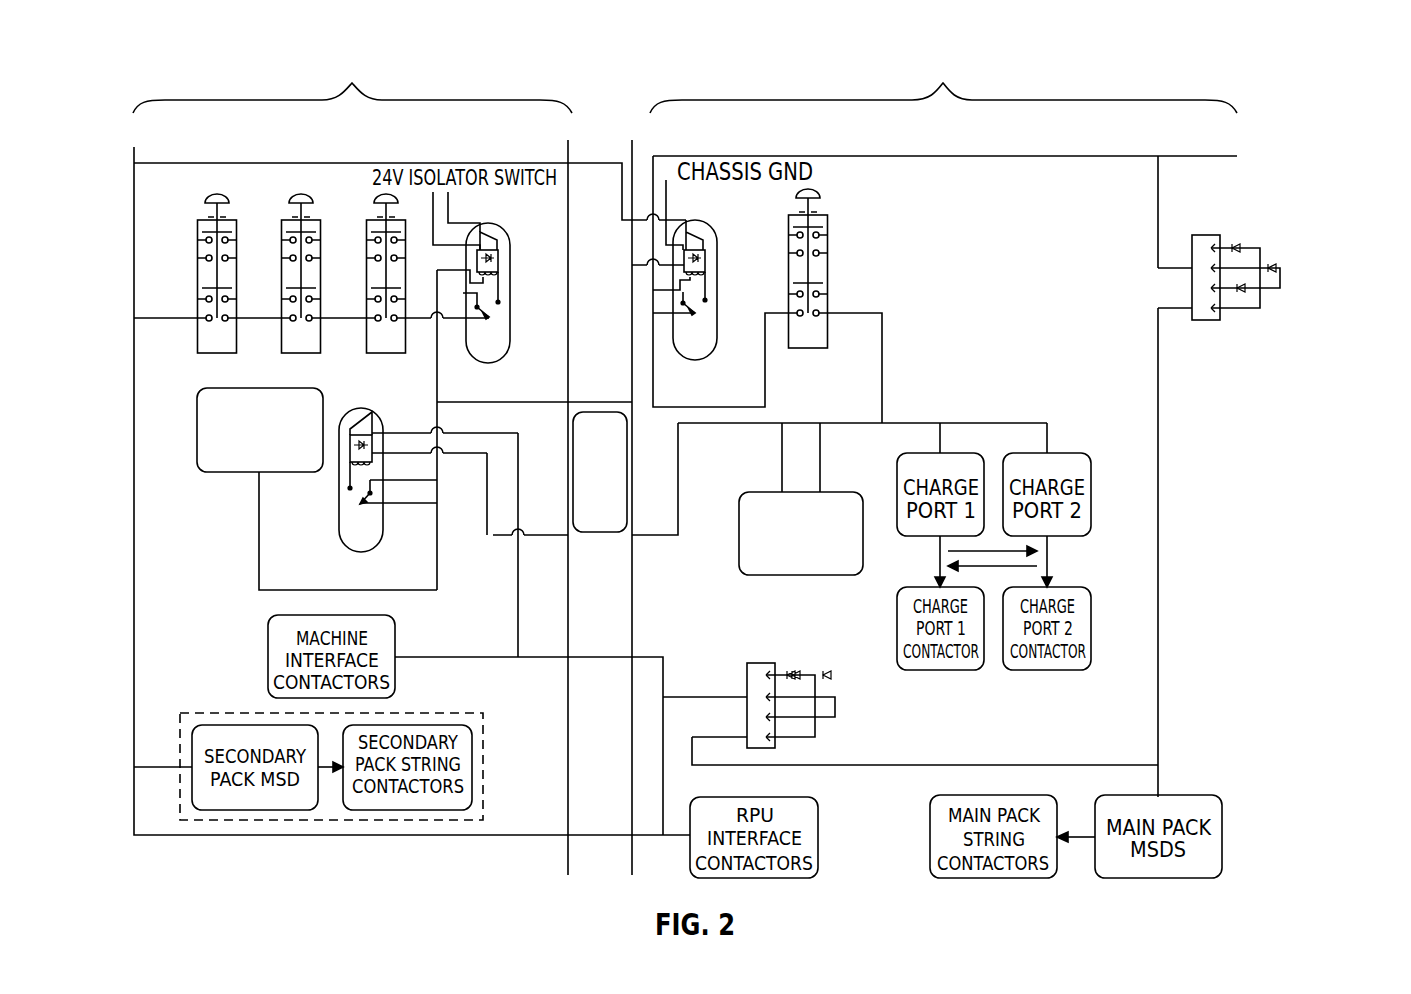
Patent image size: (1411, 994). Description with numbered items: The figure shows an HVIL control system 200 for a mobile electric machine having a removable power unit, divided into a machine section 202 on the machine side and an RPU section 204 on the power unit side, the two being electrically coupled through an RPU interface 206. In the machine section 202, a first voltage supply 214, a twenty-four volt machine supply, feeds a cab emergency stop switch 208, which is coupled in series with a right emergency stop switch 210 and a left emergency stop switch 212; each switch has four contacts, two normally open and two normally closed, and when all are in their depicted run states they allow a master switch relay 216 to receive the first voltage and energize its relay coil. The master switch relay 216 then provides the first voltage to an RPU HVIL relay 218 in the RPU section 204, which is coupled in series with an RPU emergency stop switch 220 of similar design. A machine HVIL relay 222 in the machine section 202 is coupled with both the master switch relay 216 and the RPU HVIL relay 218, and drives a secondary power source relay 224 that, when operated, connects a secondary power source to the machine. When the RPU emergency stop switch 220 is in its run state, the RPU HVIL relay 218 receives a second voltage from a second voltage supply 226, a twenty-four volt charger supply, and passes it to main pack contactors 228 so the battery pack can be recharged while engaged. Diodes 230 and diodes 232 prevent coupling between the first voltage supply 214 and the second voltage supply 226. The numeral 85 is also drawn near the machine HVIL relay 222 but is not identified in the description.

The HVIL control system 200 is at (1312, 68).
The machine section 202 is at (352, 83).
The RPU section 204 is at (943, 83).
The RPU interface 206 is at (627, 488).
The cab emergency stop switch 208 is at (197, 248).
The right emergency stop switch 210 is at (281, 248).
The left emergency stop switch 212 is at (366, 248).
The first voltage supply 214 is at (110, 120).
The master switch relay 216 is at (510, 296).
The RPU HVIL relay 218 is at (720, 290).
The RPU emergency stop switch 220 is at (828, 270).
The machine HVIL relay 222 is at (337, 526).
The secondary power source relay 224 is at (197, 430).
The second voltage supply 226 is at (1250, 127).
The main pack contactors 228 is at (739, 545).
The diodes 230 is at (1257, 247).
The diodes 232 is at (747, 670).
The high voltage interlock loop 85 is at (372, 425).